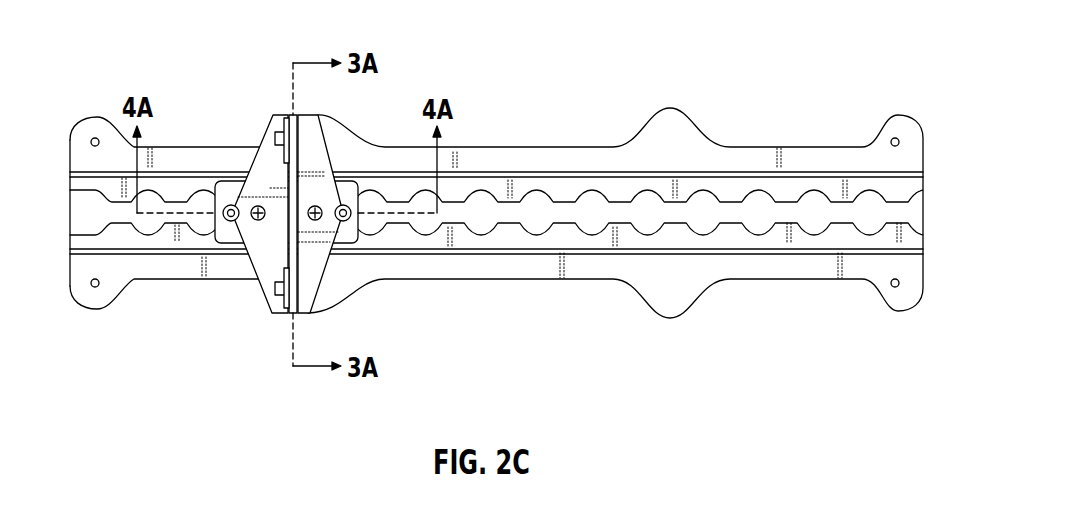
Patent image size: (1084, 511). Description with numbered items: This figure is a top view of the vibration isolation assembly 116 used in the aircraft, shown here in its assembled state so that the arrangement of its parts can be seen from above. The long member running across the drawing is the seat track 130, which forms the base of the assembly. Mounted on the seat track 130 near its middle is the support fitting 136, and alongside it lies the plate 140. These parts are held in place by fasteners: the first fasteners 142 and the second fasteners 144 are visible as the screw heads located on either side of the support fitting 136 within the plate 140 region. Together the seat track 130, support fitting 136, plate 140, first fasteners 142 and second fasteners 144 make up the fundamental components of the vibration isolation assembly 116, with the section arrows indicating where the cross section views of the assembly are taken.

The vibration isolation assembly 116 is at (496, 185).
The seat track 130 is at (800, 147).
The support fitting 136 is at (318, 120).
The plate 140 is at (240, 244).
The first fasteners 142 is at (229, 205).
The second fasteners 144 is at (316, 221).